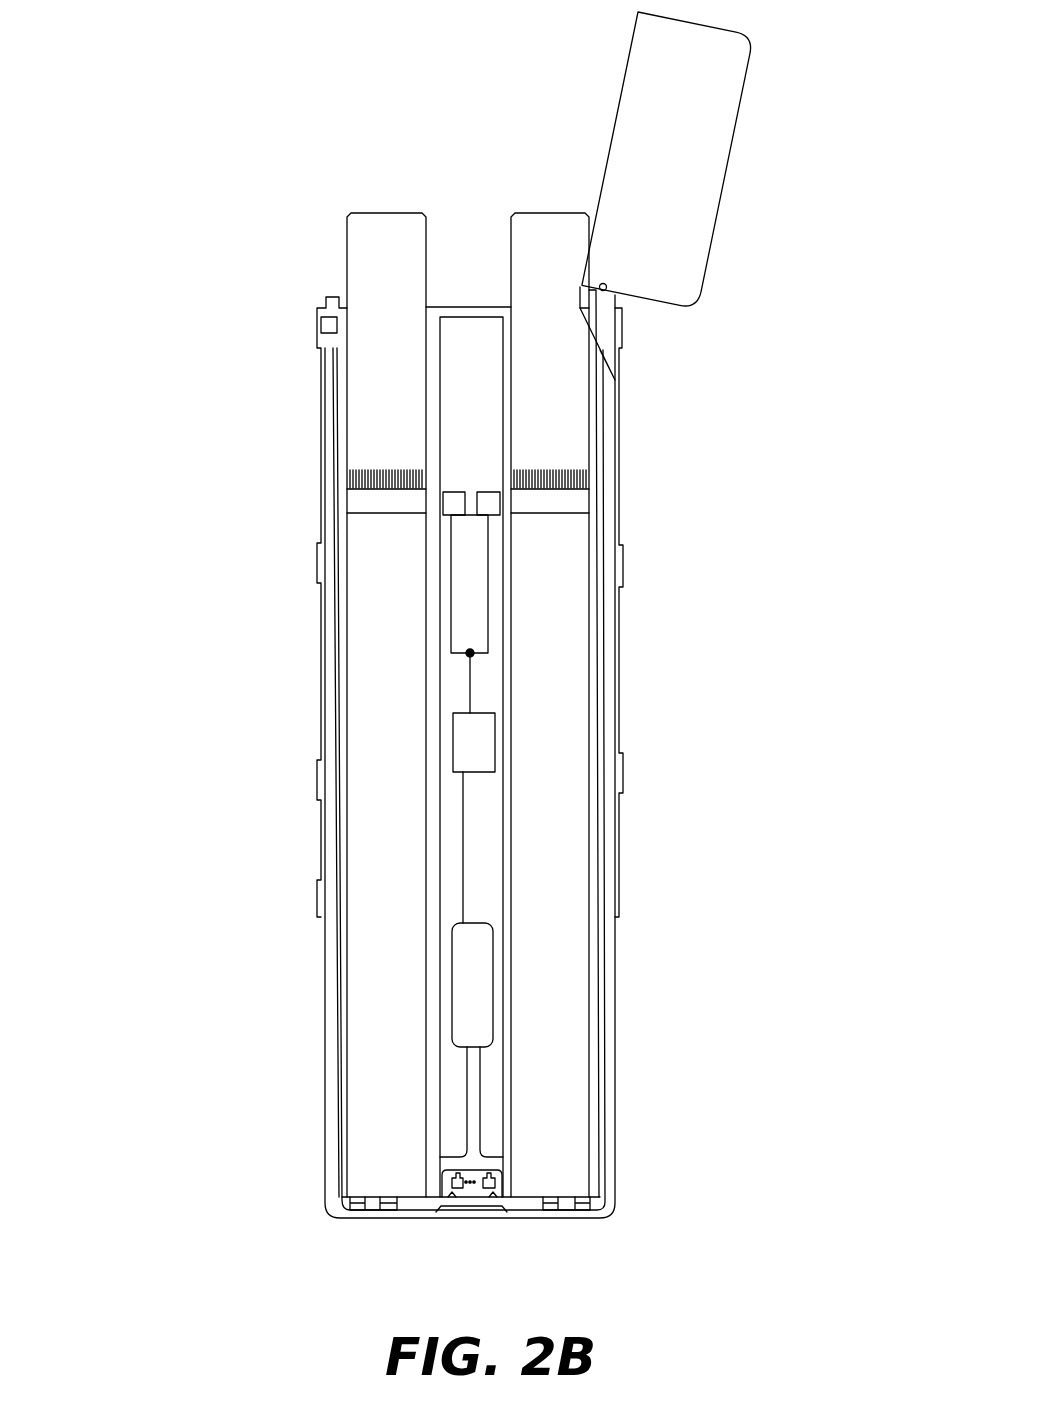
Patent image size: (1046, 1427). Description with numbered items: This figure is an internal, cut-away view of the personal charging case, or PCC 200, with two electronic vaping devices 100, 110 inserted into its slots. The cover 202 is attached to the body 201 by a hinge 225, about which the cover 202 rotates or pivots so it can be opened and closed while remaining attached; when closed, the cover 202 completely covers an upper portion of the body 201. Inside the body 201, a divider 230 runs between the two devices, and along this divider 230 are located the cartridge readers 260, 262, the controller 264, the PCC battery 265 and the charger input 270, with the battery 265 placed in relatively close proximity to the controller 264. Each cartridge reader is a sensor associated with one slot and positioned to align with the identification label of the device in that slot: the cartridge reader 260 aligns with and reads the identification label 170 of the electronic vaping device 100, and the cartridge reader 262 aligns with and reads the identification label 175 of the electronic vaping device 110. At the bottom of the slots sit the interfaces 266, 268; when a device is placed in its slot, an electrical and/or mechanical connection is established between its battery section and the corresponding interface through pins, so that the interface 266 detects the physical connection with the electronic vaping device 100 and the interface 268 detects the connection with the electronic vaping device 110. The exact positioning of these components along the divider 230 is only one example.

The personal charging case 200 is at (190, 960).
The body 201 is at (620, 672).
The cover 202 is at (745, 95).
The hinge 225 is at (606, 292).
The electronic vaping device 100 is at (372, 213).
The electronic vaping device 110 is at (536, 213).
The identification label 170 is at (346, 498).
The identification label 175 is at (567, 482).
The divider 230 is at (511, 887).
The cartridge reader 260 is at (452, 492).
The cartridge reader 262 is at (483, 517).
The controller 264 is at (472, 773).
The battery 265 is at (492, 982).
The interface 266 is at (360, 1210).
The interface 268 is at (548, 1210).
The charger input 270 is at (468, 1215).